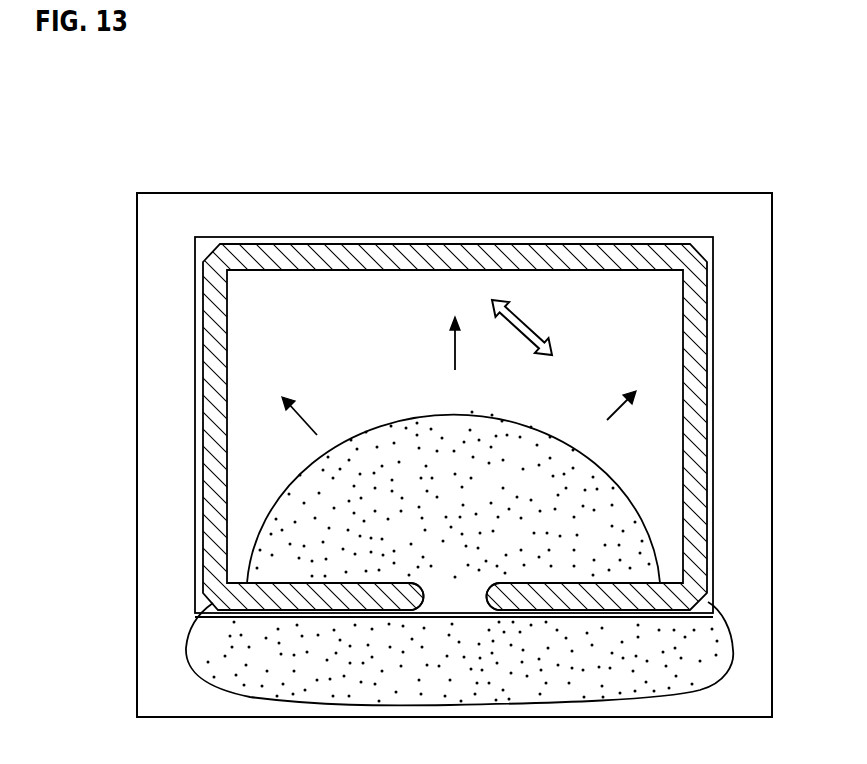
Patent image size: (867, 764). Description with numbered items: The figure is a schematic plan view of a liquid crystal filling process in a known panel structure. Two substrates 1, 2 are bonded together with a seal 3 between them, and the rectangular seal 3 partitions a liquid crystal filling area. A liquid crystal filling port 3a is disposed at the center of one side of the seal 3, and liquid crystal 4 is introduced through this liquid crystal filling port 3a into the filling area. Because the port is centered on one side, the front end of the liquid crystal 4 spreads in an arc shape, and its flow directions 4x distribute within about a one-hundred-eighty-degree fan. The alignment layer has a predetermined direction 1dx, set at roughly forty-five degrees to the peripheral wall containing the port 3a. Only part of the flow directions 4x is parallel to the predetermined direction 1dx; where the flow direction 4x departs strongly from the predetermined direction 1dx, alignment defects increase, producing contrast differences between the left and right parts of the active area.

The substrate 1 is at (202, 193).
The substrate 2 is at (508, 237).
The seal 3 is at (295, 243).
The liquid crystal filling port 3a is at (424, 582).
The liquid crystal 4 is at (640, 510).
The flow direction 4x is at (303, 419).
The predetermined direction 1dx is at (528, 321).